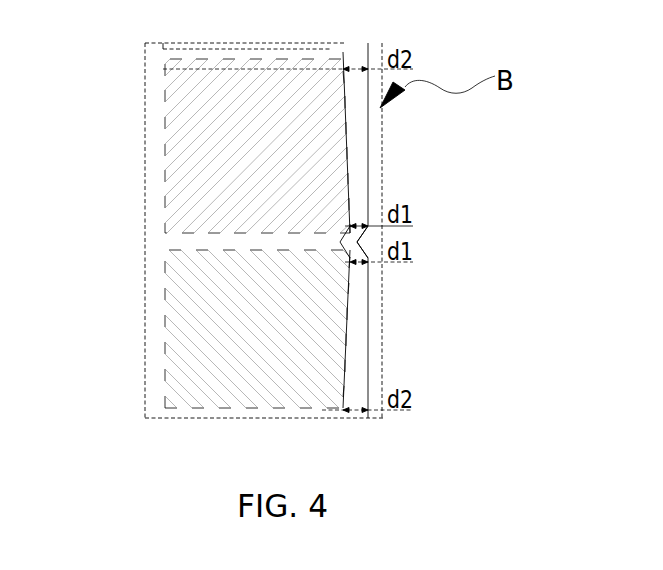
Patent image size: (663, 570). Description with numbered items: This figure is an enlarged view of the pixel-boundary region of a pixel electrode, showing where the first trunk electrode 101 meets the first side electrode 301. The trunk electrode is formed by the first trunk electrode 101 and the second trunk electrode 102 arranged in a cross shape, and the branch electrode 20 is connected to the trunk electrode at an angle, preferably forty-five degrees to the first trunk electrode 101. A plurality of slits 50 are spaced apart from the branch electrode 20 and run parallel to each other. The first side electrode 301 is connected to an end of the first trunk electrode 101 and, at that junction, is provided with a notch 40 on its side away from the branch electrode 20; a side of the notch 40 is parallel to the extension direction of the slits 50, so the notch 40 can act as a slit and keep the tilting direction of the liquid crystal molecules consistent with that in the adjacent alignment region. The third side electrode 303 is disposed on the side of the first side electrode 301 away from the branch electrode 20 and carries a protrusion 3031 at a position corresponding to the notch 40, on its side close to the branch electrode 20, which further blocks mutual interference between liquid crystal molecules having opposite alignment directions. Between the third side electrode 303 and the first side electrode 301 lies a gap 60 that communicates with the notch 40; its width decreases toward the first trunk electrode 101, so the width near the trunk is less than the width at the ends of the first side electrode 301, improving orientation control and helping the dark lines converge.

The branch electrode 20 is at (190, 104).
The slits 50 is at (192, 120).
The notch 40 is at (342, 239).
The first trunk electrode 101 is at (222, 242).
The second trunk electrode 102 is at (152, 342).
The gap 60 is at (362, 157).
The first side electrode 301 is at (347, 194).
The protrusion 3031 is at (368, 245).
The third side electrode 303 is at (368, 343).